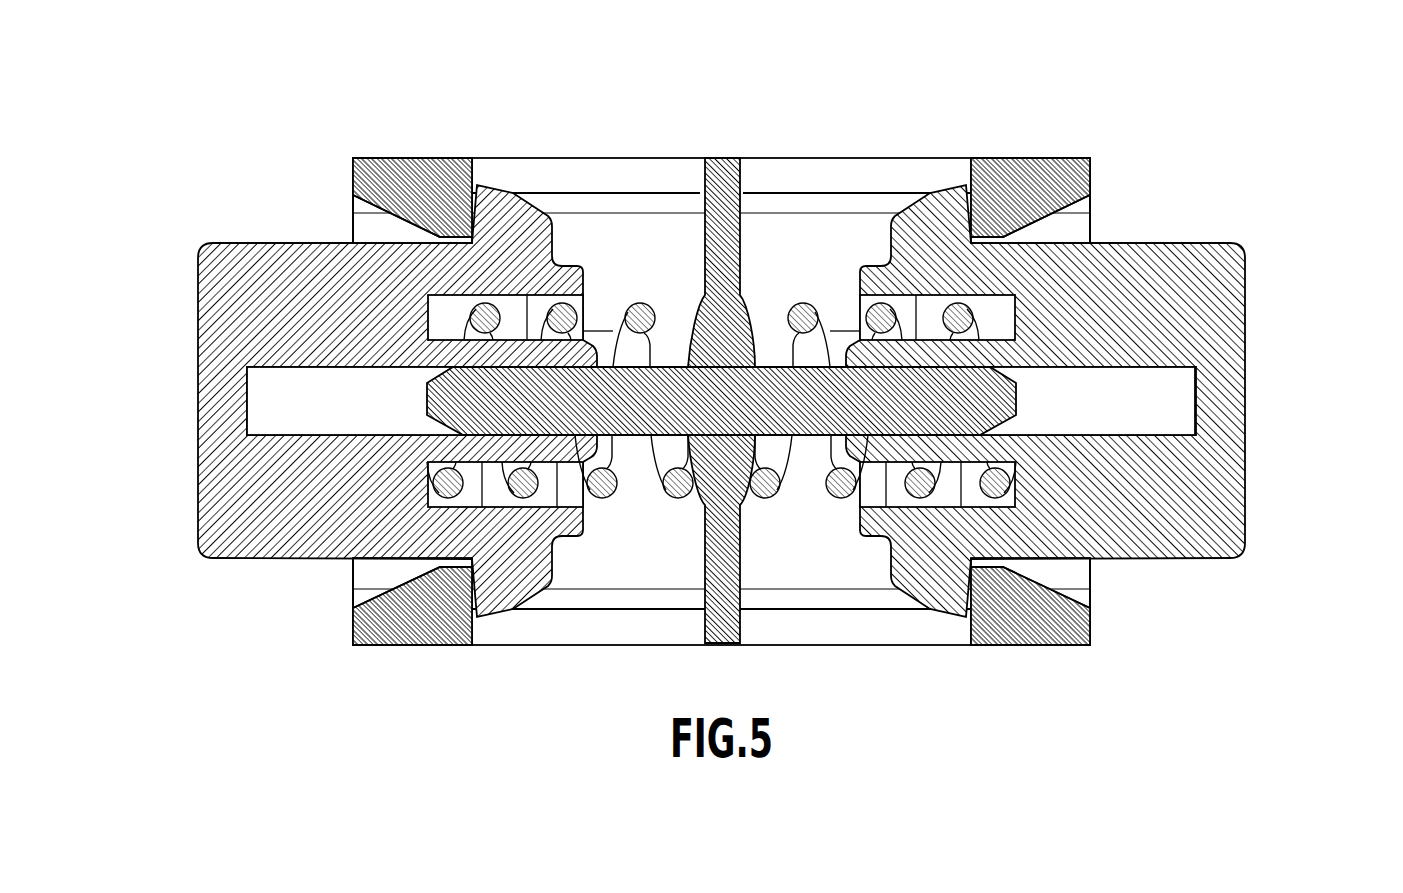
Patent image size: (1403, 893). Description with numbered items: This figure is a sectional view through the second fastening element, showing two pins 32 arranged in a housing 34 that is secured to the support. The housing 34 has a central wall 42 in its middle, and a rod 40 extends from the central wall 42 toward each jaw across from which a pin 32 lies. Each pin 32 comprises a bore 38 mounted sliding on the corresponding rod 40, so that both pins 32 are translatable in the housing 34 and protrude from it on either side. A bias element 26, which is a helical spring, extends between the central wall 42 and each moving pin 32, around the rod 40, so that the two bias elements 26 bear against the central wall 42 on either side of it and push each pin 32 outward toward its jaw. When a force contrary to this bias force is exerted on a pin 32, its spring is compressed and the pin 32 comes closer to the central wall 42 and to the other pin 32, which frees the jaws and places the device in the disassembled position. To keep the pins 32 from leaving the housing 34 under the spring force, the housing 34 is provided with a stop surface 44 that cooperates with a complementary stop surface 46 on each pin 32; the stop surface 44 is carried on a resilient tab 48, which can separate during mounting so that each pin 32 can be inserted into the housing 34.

The bias element 26 is at (676, 494).
The pin 32 is at (223, 298).
The housing 34 is at (762, 232).
The bore 38 is at (273, 422).
The rod 40 is at (497, 420).
The central wall 42 is at (700, 240).
The stop surface 44 is at (478, 190).
The complementary stop surface 46 is at (443, 183).
The resilient tab 48 is at (418, 178).